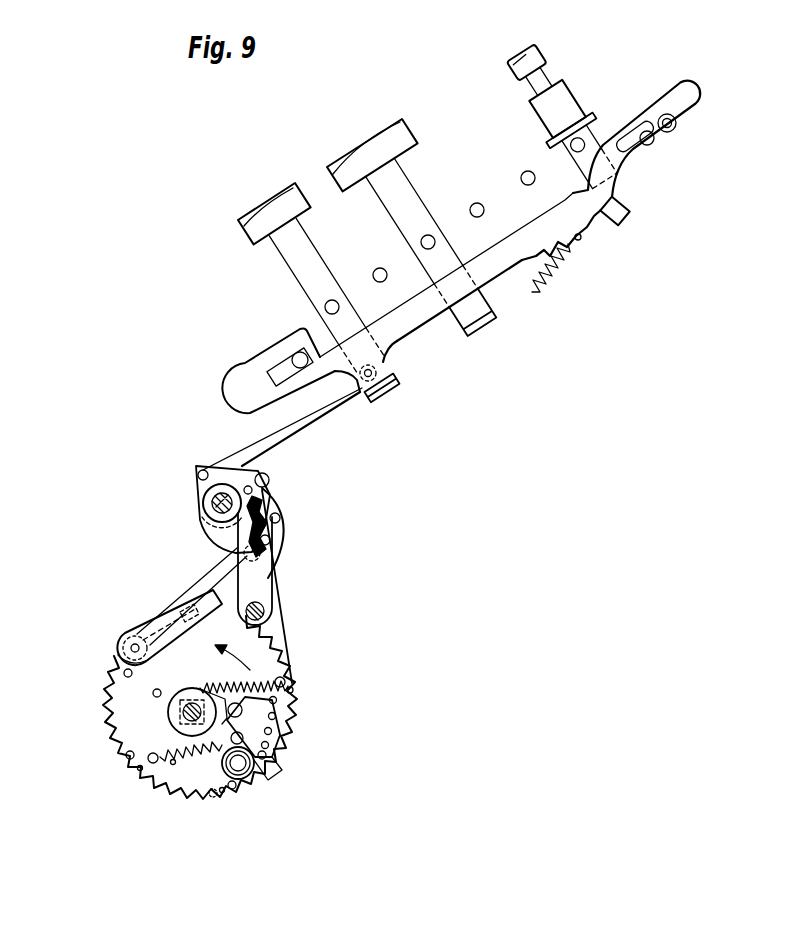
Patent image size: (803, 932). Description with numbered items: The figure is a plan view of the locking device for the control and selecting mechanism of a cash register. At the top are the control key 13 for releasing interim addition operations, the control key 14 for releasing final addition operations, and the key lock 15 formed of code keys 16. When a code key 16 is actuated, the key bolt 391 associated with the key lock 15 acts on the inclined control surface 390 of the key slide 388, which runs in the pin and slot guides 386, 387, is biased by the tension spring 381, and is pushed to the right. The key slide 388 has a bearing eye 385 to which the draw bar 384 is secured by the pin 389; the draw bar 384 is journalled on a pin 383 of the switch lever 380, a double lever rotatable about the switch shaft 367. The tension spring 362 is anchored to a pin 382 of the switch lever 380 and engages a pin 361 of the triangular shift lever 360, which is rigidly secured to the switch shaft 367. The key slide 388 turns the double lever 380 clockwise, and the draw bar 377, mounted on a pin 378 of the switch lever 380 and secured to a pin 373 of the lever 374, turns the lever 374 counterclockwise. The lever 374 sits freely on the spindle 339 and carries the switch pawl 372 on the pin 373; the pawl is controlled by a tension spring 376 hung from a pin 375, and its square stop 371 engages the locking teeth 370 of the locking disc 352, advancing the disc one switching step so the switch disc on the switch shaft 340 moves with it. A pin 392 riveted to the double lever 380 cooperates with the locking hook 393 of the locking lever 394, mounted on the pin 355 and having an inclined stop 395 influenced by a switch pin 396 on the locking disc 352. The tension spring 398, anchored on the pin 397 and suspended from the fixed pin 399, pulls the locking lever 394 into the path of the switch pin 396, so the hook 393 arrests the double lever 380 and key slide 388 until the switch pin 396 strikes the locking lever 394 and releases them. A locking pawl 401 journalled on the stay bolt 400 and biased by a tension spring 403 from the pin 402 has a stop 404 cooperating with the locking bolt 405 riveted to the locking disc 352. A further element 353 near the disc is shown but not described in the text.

The control key 13 is at (278, 207).
The control key 14 is at (403, 135).
The key lock 15 is at (578, 97).
The code key 16 is at (535, 55).
The spindle 339 is at (200, 735).
The switch shaft 340 is at (222, 790).
The locking disc 352 is at (140, 768).
The pin 353 is at (212, 798).
The pin 355 is at (264, 612).
The shift lever 360 is at (241, 463).
The pin 361 is at (269, 478).
The tension spring 362 is at (285, 526).
The switch shaft 367 is at (212, 503).
The locking teeth 370 is at (272, 772).
The square stop 371 is at (188, 605).
The switch pawl 372 is at (192, 613).
The pin 373 is at (133, 643).
The lever 374 is at (115, 657).
The pin 375 is at (152, 693).
The tension spring 376 is at (118, 655).
The draw bar 377 is at (220, 573).
The pin 378 is at (262, 557).
The switch lever 380 is at (223, 527).
The tension spring 381 is at (568, 268).
The pin 382 is at (271, 542).
The pin 383 is at (201, 470).
The draw bar 384 is at (343, 393).
The bearing eye 385 is at (385, 367).
The pin and slot guide 386 is at (652, 135).
The pin and slot guide 387 is at (627, 150).
The key slide 388 is at (547, 250).
The pin 389 is at (393, 390).
The inclined control surface 390 is at (585, 175).
The key bolt 391 is at (596, 133).
The pin 392 is at (281, 517).
The locking hook 393 is at (262, 512).
The locking lever 394 is at (267, 585).
The inclined stop 395 is at (293, 690).
The switch pin 396 is at (128, 758).
The pin 397 is at (295, 681).
The tension spring 398 is at (235, 663).
The fixed pin 399 is at (183, 700).
The stay bolt 400 is at (250, 787).
The locking pawl 401 is at (272, 757).
The pin 402 is at (153, 763).
The tension spring 403 is at (173, 762).
The stop 404 is at (278, 733).
The locking bolt 405 is at (243, 710).